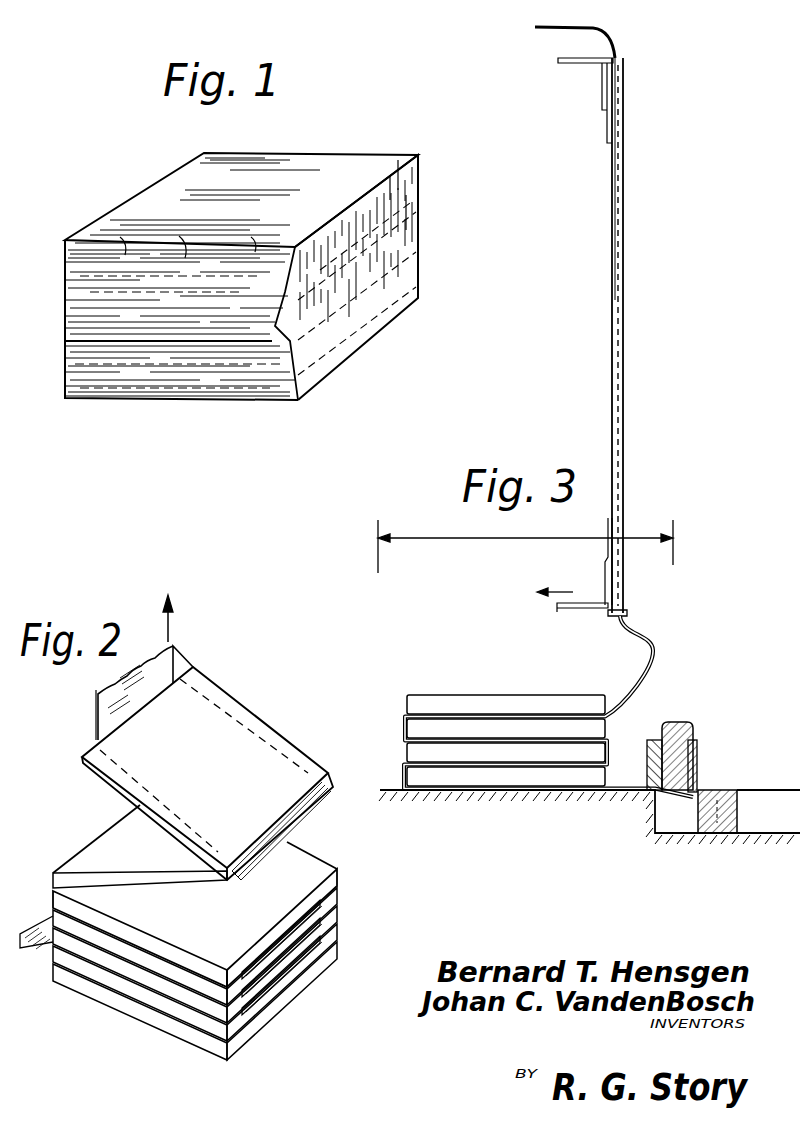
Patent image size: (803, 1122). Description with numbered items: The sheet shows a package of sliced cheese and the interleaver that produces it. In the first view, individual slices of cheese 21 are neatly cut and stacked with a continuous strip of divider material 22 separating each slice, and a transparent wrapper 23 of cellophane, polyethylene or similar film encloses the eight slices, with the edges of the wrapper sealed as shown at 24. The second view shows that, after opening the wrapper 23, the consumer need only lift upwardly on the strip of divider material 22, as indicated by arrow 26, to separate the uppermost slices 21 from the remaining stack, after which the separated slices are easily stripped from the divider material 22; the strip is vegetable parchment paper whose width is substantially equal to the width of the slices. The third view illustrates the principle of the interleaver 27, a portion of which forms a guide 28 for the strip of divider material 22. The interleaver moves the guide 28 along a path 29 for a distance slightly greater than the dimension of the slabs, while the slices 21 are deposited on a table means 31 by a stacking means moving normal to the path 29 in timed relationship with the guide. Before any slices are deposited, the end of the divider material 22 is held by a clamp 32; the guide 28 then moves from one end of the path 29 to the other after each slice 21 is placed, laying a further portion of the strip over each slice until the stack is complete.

In FIG. 1, the slices of cheese 21 is at (413, 172).
In FIG. 2, the slices of cheese 21 is at (243, 737).
In FIG. 3, the slices of cheese 21 is at (437, 703).
In FIG. 1, the strip of divider material 22 is at (413, 208).
In FIG. 2, the strip of divider material 22 is at (160, 663).
In FIG. 3, the strip of divider material 22 is at (612, 42).
In FIG. 1, the transparent wrapper 23 is at (325, 163).
In FIG. 1, the sealed edges of wrapper 24 is at (198, 343).
In FIG. 2, the arrow 26 is at (172, 621).
In FIG. 3, the interleaver 27 is at (624, 230).
In FIG. 3, the guide 28 is at (623, 320).
In FIG. 3, the path 29 is at (643, 537).
In FIG. 3, the table means 31 is at (584, 812).
In FIG. 3, the clamp 32 is at (681, 718).